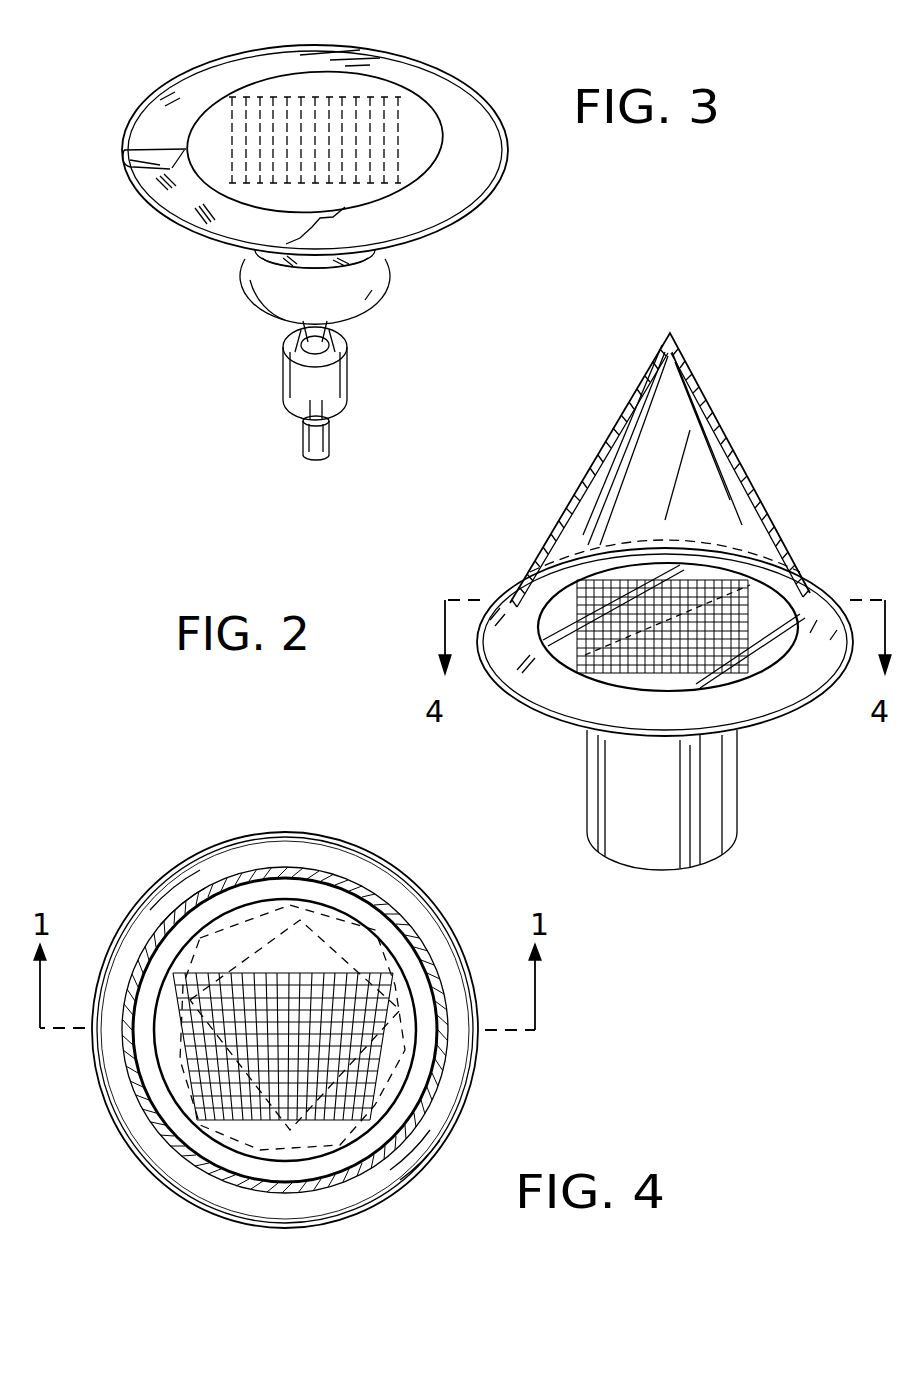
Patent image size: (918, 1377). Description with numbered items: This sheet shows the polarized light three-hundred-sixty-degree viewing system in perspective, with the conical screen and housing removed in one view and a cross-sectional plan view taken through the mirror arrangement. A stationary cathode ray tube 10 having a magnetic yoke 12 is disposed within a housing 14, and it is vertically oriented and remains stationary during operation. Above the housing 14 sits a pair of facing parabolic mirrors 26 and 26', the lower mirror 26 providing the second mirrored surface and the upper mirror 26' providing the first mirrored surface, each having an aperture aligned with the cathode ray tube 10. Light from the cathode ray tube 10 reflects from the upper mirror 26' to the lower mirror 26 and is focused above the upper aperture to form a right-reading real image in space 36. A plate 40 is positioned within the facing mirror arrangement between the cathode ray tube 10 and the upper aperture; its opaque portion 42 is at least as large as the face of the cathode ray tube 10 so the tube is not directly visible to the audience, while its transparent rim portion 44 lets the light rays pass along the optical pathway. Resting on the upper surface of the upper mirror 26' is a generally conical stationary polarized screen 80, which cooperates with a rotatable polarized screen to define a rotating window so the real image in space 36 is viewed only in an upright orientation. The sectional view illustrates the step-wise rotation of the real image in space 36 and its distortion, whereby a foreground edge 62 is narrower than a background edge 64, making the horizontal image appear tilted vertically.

In FIG. 3, the cathode ray tube 10 is at (378, 290).
In FIG. 3, the magnetic yoke 12 is at (348, 372).
In FIG. 2, the housing 14 is at (650, 832).
In FIG. 3, the lower parabolic mirror 26 is at (112, 174).
In FIG. 3, the upper parabolic mirror 26' is at (331, 146).
In FIG. 2, the upper parabolic mirror 26' is at (646, 657).
In FIG. 4, the upper parabolic mirror 26' is at (268, 1039).
In FIG. 3, the real image in space 36 is at (372, 118).
In FIG. 2, the real image in space 36 is at (742, 605).
In FIG. 4, the real image in space 36 is at (340, 1068).
In FIG. 3, the plate 40 is at (150, 198).
In FIG. 2, the plate 40 is at (757, 662).
In FIG. 4, the plate 40 is at (415, 987).
In FIG. 3, the opaque portion 42 is at (250, 218).
In FIG. 3, the transparent rim portion 44 is at (185, 218).
In FIG. 4, the foreground edge 62 is at (355, 1178).
In FIG. 4, the background edge 64 is at (365, 990).
In FIG. 2, the stationary polarized screen 80 is at (732, 442).
In FIG. 4, the stationary polarized screen 80 is at (334, 1195).